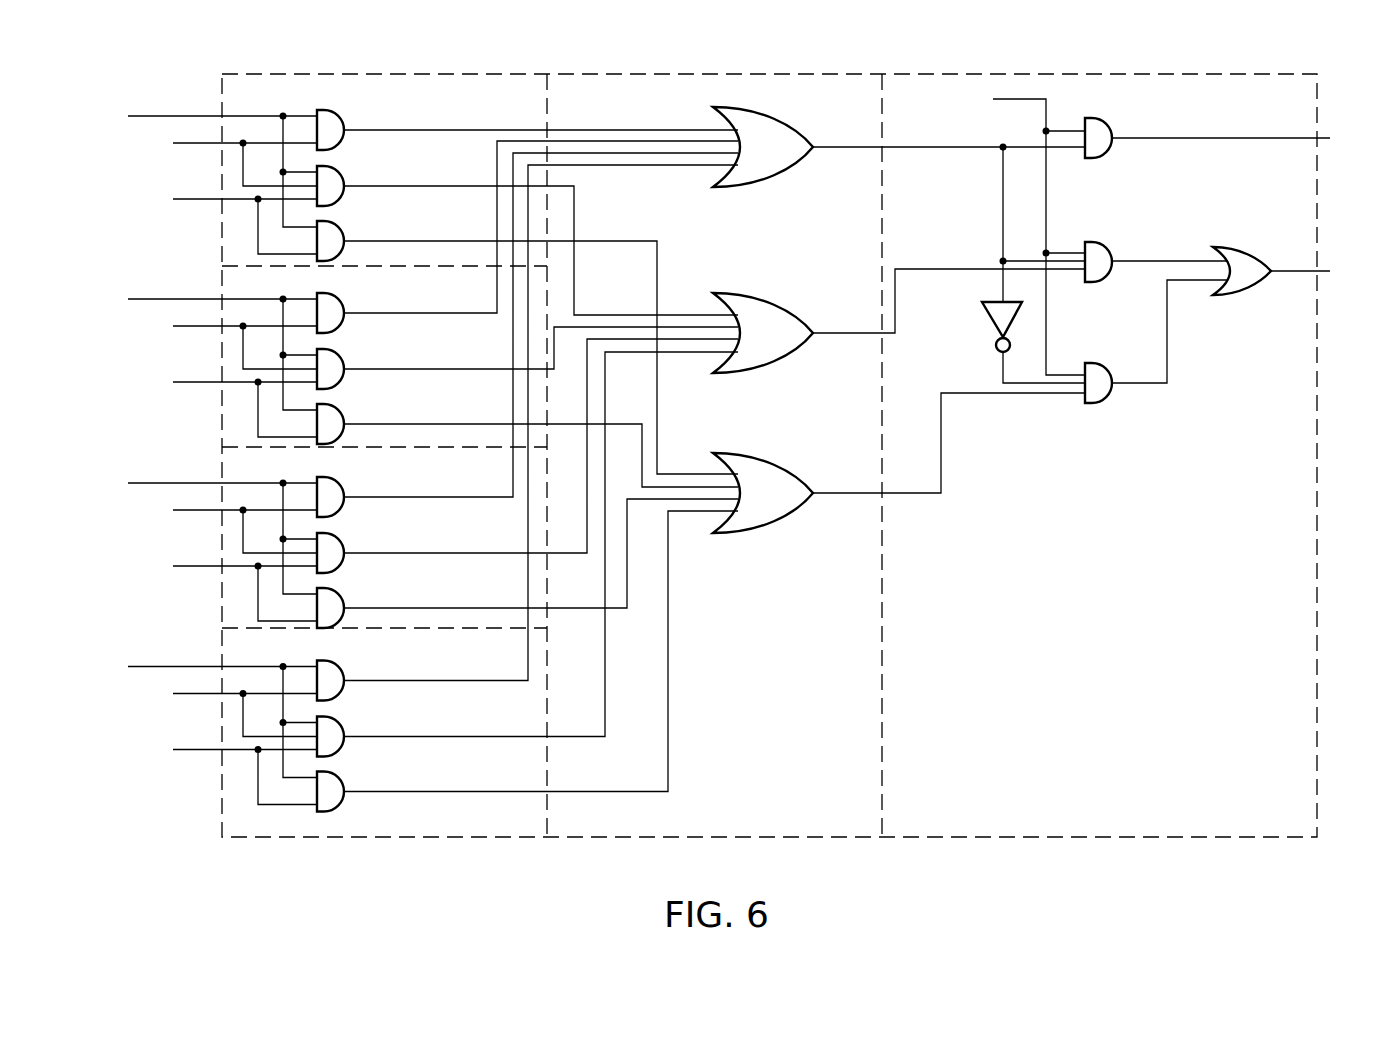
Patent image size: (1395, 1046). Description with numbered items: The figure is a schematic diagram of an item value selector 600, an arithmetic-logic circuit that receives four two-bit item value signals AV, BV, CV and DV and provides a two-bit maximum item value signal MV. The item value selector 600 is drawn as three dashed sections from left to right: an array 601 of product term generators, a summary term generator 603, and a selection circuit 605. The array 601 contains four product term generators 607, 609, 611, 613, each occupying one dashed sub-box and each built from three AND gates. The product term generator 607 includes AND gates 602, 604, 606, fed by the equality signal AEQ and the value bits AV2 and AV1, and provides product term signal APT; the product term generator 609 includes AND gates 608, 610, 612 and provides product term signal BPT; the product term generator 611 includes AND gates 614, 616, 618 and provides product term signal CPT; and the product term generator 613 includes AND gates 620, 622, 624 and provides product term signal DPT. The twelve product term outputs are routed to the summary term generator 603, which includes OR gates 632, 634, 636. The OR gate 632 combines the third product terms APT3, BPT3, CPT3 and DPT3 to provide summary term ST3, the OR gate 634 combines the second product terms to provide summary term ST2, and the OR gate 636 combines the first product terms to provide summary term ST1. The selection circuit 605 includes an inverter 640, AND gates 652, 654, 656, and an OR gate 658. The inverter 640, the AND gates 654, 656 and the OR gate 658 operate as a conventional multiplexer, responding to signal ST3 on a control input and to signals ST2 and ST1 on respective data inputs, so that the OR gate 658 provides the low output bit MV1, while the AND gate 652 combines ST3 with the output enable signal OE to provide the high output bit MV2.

The item value selector 600 is at (992, 865).
The array of product term generators 601 is at (441, 837).
The summary term generator 603 is at (788, 837).
The selection circuit 605 is at (1195, 837).
The product term generator 607 is at (270, 109).
The product term generator 609 is at (269, 355).
The product term generator 611 is at (269, 539).
The product term generator 613 is at (269, 723).
The AND gate 602 is at (342, 111).
The AND gate 604 is at (342, 167).
The AND gate 606 is at (342, 222).
The AND gate 608 is at (364, 299).
The AND gate 610 is at (364, 355).
The AND gate 612 is at (364, 410).
The AND gate 614 is at (364, 483).
The AND gate 616 is at (364, 539).
The AND gate 618 is at (364, 594).
The AND gate 620 is at (364, 667).
The AND gate 622 is at (364, 723).
The AND gate 624 is at (364, 778).
The OR gate 632 is at (754, 190).
The OR gate 634 is at (754, 376).
The OR gate 636 is at (754, 536).
The inverter 640 is at (985, 316).
The AND gate 652 is at (1106, 119).
The AND gate 654 is at (1106, 243).
The AND gate 656 is at (1090, 405).
The OR gate 658 is at (1234, 247).